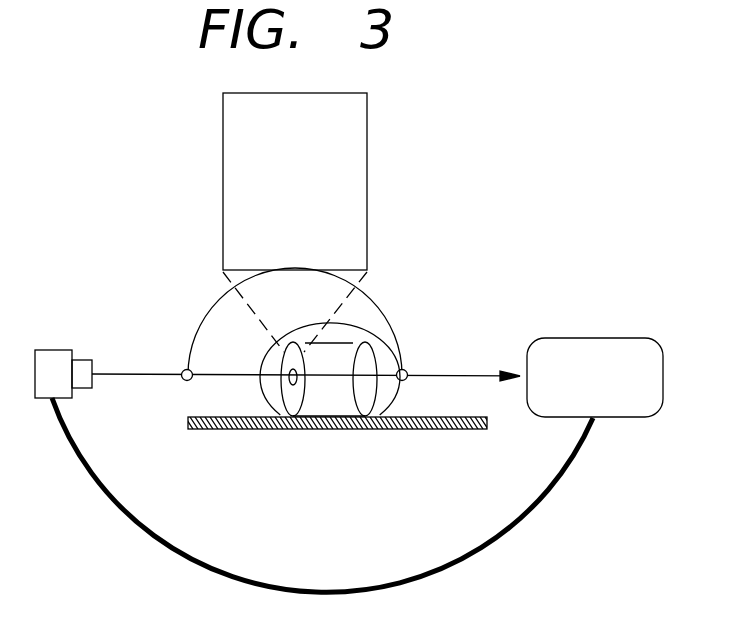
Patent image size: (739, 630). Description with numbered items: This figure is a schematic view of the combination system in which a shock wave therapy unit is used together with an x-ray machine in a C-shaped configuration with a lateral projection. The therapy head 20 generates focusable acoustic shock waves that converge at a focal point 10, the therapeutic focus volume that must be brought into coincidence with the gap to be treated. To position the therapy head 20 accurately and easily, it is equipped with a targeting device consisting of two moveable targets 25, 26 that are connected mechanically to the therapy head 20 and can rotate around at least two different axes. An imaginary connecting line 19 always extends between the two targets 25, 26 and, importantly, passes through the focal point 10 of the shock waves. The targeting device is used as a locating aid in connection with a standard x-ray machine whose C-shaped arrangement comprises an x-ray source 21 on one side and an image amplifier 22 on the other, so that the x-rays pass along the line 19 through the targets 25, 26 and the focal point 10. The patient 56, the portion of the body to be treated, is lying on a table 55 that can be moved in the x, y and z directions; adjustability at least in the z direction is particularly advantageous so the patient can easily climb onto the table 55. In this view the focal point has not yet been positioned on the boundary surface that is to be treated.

The focal point 10 is at (293, 386).
The imaginary connecting line 19 is at (306, 389).
The therapy head 20 is at (277, 177).
The x-ray source 21 is at (63, 357).
The image amplifier 22 is at (577, 401).
The target 25 is at (169, 362).
The target 26 is at (421, 362).
The table 55 is at (258, 430).
The patient 56 is at (317, 395).